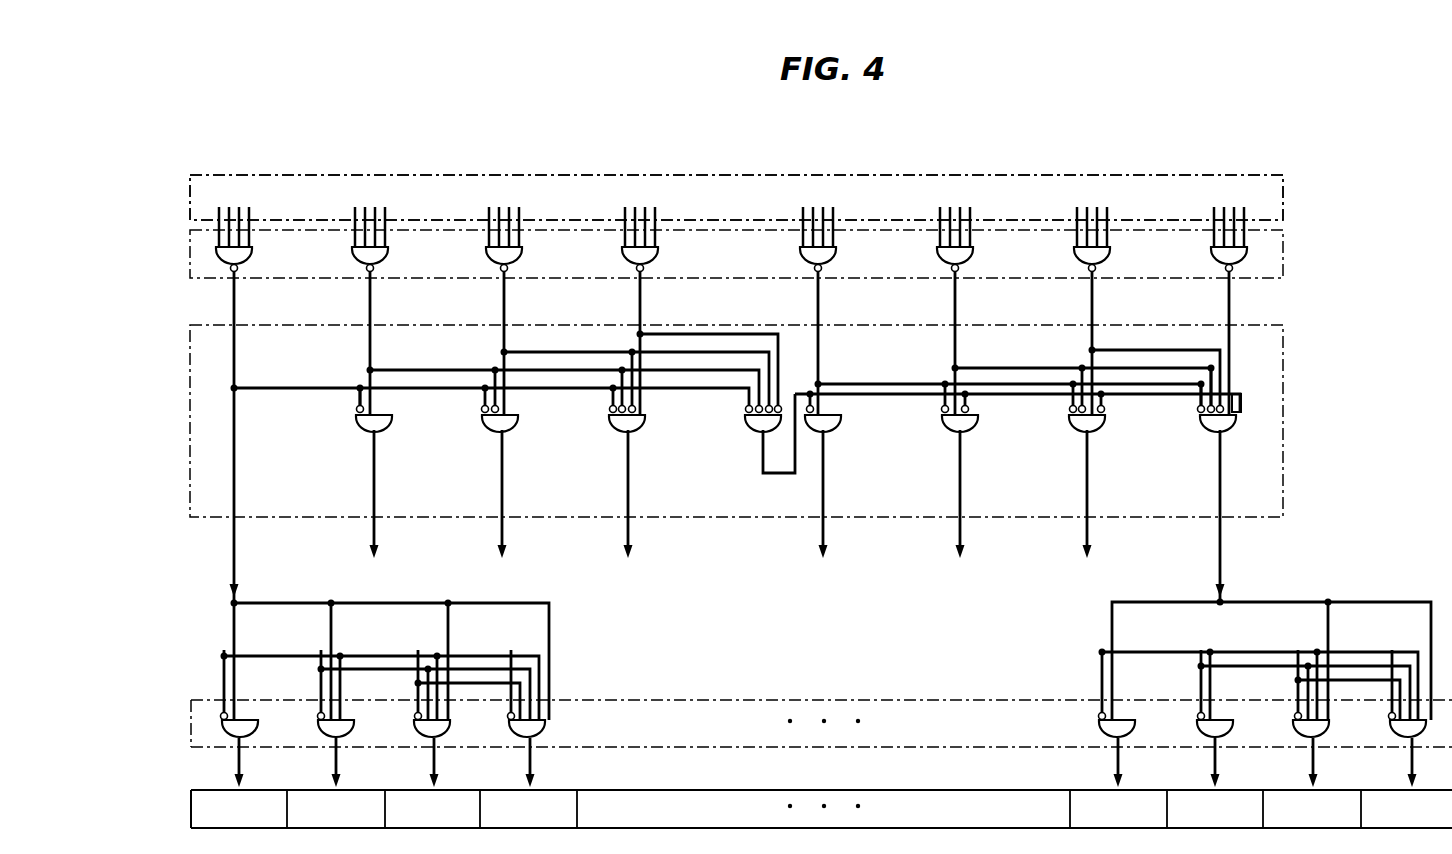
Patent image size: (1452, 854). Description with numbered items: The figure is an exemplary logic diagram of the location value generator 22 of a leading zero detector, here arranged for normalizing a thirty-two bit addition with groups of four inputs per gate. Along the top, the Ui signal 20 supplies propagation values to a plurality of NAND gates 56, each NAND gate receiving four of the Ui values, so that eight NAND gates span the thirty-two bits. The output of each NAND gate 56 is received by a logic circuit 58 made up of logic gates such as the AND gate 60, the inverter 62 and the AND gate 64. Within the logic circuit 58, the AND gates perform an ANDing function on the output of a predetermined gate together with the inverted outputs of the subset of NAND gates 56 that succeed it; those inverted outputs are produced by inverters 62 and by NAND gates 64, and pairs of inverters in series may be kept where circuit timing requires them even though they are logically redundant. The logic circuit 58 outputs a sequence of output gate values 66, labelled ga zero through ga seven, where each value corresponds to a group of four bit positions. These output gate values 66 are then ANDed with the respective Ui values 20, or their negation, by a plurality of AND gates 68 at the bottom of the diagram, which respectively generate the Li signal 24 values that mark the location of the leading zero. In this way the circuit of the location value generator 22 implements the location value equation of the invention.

The location value generator 22 is at (235, 127).
The Ui signal 20 is at (183, 207).
The NAND gates 56 is at (184, 253).
The logic circuit 58 is at (190, 365).
The AND gate 60 is at (385, 430).
The inverter 62 is at (352, 412).
The AND gate 64 is at (746, 430).
The output gate values 66 is at (204, 556).
The AND gates 68 is at (185, 718).
The Li signal 24 is at (185, 806).